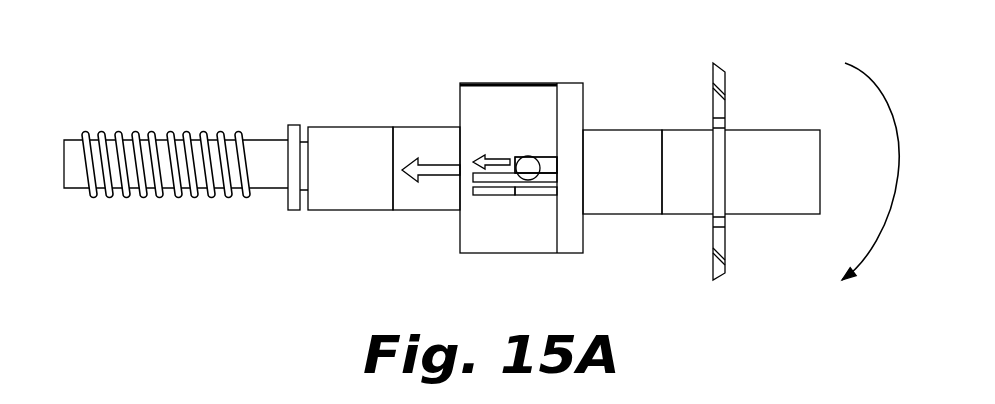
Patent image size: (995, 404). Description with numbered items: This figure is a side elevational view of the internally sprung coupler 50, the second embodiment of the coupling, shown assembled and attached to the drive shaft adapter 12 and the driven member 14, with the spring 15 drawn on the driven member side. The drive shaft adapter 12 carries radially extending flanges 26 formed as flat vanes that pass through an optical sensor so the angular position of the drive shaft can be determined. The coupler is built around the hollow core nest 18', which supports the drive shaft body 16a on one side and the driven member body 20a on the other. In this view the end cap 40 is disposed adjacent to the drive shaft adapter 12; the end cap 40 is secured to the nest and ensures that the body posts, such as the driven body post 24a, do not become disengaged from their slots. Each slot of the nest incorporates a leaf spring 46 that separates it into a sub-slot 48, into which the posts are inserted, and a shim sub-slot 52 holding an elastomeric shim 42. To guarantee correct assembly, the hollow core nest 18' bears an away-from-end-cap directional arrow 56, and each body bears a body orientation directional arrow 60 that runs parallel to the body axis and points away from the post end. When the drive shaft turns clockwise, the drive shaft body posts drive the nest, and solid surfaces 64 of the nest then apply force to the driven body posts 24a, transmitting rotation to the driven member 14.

The drive shaft adapter 12 is at (765, 212).
The driven member 14 is at (342, 212).
The spring 15 is at (130, 133).
The drive shaft body 16a is at (594, 214).
The hollow core nest 18' is at (504, 50).
The driven member body 20a is at (424, 212).
The driven body post 24a is at (529, 165).
The radially extending flange 26 is at (726, 73).
The end cap 40 is at (571, 245).
The elastomeric shim 42 is at (526, 192).
The leaf spring 46 is at (542, 192).
The sub-slot 48 is at (552, 172).
The internally sprung coupler 50 is at (288, 104).
The shim sub-slot 52 is at (494, 192).
The directional arrow 56 is at (497, 155).
The body orientation directional arrow 60 is at (406, 167).
The solid surface 64 is at (520, 158).